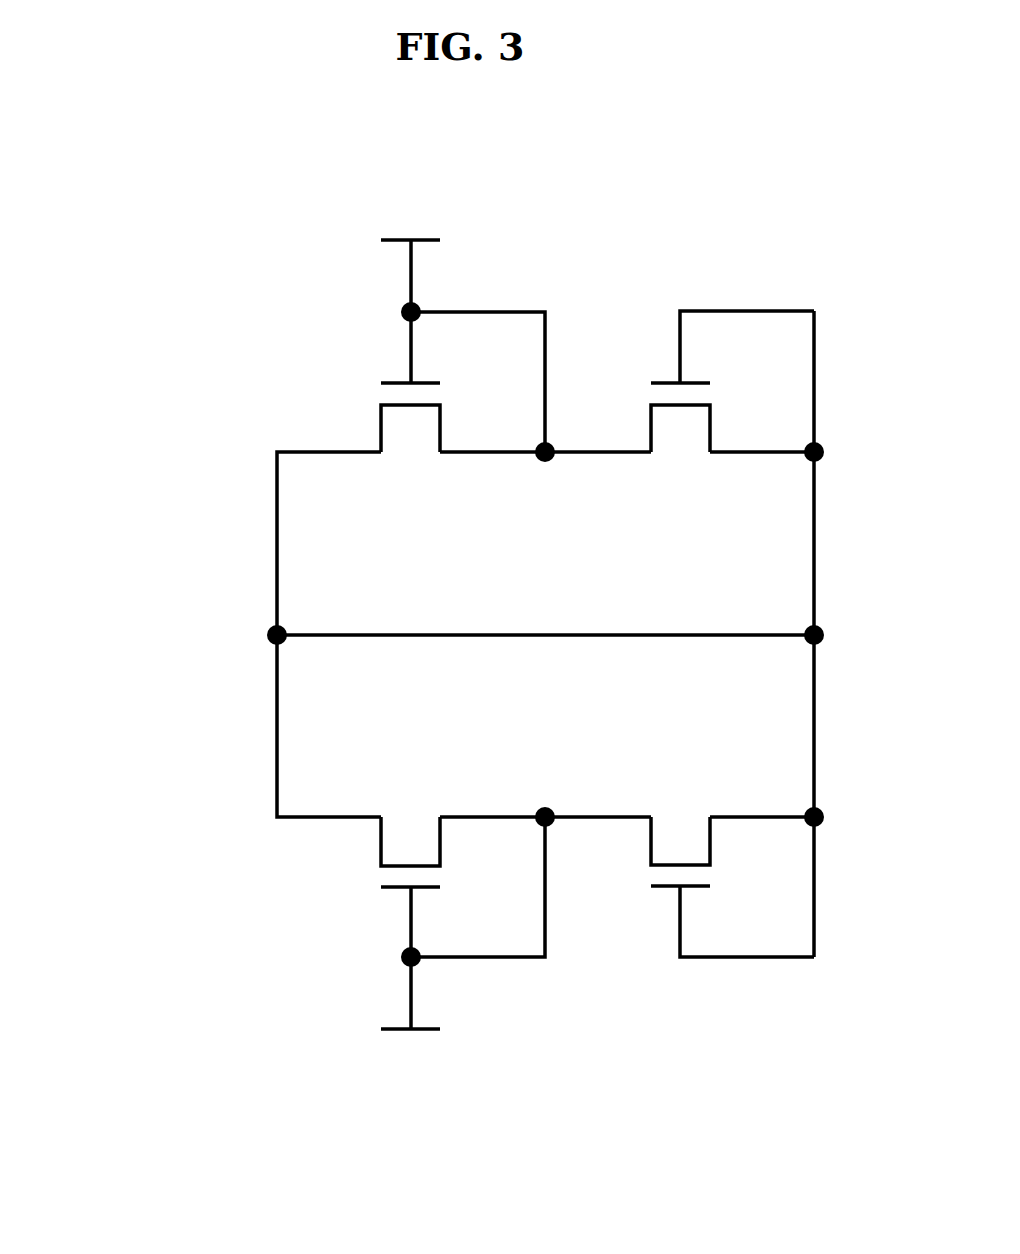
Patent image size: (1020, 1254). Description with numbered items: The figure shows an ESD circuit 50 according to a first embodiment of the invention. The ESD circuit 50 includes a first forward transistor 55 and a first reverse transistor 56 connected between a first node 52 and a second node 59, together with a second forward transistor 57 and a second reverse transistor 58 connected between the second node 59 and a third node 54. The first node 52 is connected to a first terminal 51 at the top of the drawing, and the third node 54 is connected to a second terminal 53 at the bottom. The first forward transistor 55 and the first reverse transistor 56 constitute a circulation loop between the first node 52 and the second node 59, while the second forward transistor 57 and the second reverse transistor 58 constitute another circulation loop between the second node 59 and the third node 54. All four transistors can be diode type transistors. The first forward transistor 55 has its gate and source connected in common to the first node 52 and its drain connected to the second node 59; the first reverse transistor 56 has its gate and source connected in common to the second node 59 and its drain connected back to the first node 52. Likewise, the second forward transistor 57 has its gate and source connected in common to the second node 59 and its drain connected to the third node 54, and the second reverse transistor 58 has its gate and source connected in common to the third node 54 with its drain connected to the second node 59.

The ESD circuit 50 is at (90, 210).
The first terminal 51 is at (411, 240).
The first node 52 is at (553, 448).
The second terminal 53 is at (411, 1029).
The third node 54 is at (553, 822).
The first forward transistor 55 is at (352, 377).
The first reverse transistor 56 is at (772, 275).
The second forward transistor 57 is at (773, 993).
The second reverse transistor 58 is at (353, 893).
The second node 59 is at (265, 635).